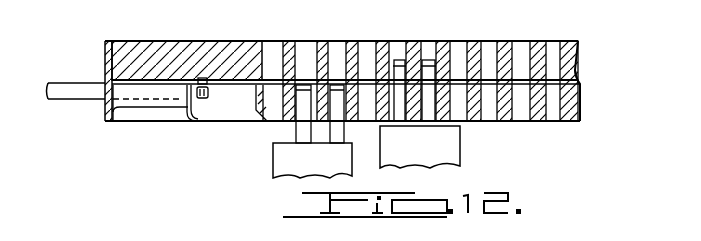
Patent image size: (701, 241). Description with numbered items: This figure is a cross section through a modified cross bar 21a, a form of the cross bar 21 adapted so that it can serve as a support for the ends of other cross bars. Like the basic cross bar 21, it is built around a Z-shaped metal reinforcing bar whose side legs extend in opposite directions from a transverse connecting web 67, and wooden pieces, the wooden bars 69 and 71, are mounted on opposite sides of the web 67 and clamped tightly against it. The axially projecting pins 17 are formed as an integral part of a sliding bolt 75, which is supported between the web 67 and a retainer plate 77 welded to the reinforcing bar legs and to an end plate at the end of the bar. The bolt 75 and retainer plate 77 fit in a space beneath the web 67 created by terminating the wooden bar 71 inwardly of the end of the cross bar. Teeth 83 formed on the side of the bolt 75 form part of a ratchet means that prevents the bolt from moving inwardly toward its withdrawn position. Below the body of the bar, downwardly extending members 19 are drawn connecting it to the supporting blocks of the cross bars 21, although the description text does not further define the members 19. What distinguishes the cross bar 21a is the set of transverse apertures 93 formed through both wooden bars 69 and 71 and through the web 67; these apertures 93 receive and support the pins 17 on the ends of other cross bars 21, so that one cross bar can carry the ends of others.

The cross bar 21a is at (241, 40).
The wooden bar 69 is at (178, 50).
The transverse apertures 93 is at (433, 41).
The axially projecting pins 17 is at (428, 60).
The transverse connecting web 67 is at (580, 80).
The wooden bar 71 is at (533, 123).
The cross bar 21 is at (273, 162).
The terminal posts 19 is at (297, 131).
The sliding bolt 75 is at (143, 100).
The retainer plate 77 is at (170, 102).
The teeth 83 is at (209, 95).